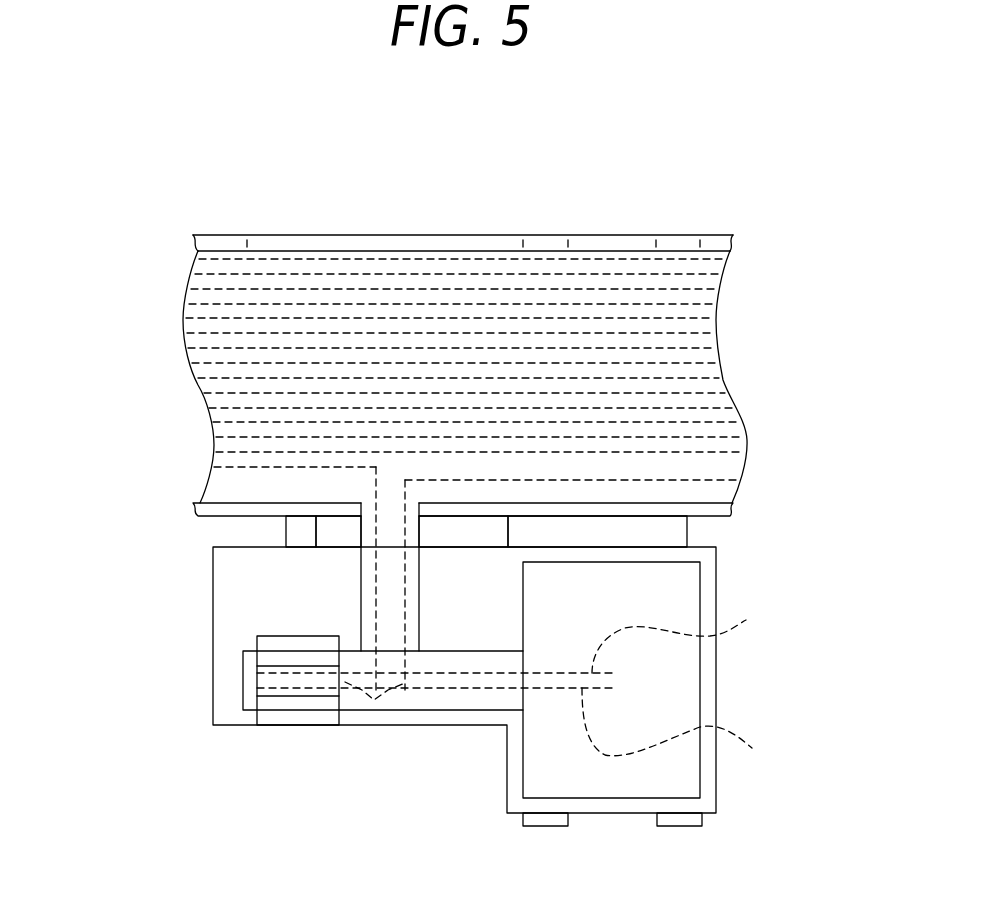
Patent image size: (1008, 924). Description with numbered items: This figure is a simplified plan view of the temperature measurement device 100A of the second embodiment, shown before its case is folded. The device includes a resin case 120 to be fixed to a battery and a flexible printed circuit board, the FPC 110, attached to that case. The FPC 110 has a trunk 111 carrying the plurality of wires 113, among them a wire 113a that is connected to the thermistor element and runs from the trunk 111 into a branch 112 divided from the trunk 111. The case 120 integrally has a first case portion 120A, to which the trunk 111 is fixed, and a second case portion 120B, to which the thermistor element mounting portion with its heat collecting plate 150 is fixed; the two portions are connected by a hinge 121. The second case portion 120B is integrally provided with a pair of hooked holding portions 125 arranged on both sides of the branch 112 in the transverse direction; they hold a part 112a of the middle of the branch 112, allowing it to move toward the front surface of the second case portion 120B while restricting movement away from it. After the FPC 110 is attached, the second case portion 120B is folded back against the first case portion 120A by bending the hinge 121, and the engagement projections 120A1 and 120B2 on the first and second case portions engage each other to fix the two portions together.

The temperature measurement device 100A is at (691, 188).
The FPC 110 is at (734, 320).
The trunk 111 is at (697, 405).
The branch 112 is at (388, 535).
The part of the middle of the branch 112a is at (374, 700).
The wires 113 is at (318, 272).
The wire connected to the thermistor element 113a is at (696, 689).
The case 120 is at (160, 572).
The first case portion 120A is at (247, 243).
The engagement projection 120A1 is at (528, 243).
The second case portion 120B is at (195, 680).
The engagement projection 120B2 is at (551, 820).
The hinge 121 is at (298, 530).
The hooked holding portions 125 is at (290, 658).
The heat collecting plate 150 is at (668, 685).